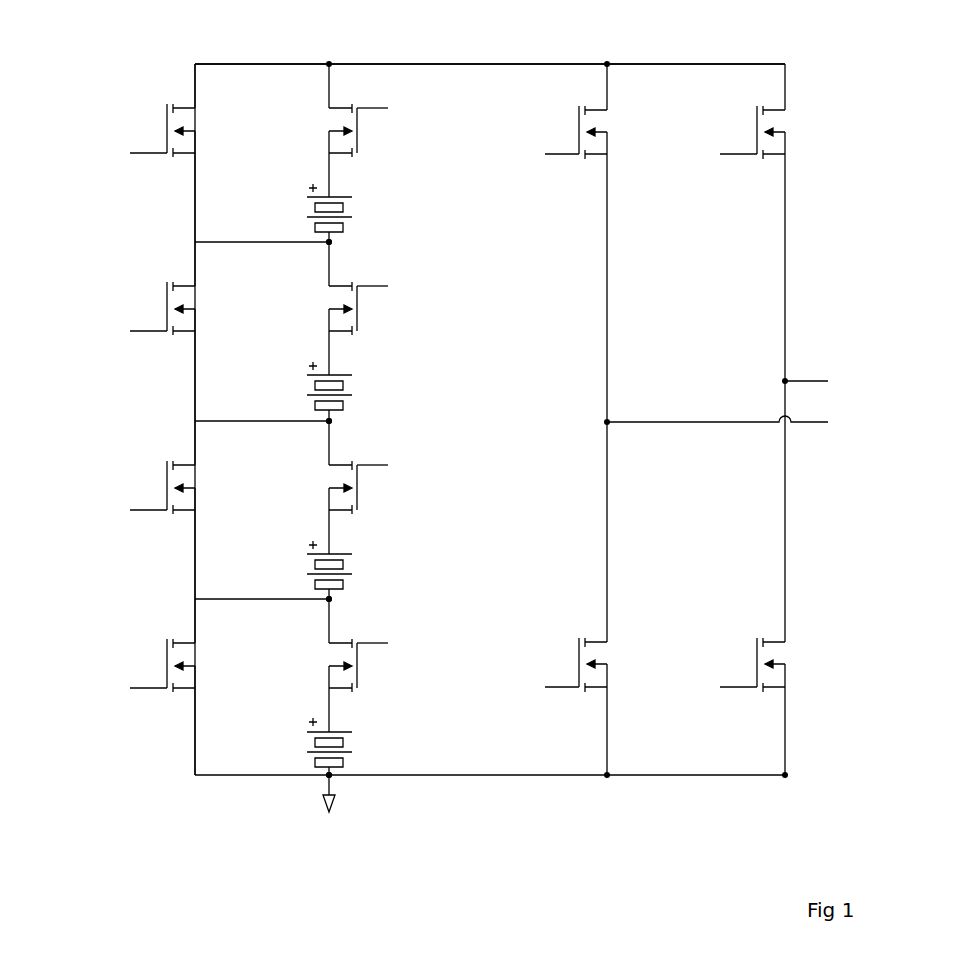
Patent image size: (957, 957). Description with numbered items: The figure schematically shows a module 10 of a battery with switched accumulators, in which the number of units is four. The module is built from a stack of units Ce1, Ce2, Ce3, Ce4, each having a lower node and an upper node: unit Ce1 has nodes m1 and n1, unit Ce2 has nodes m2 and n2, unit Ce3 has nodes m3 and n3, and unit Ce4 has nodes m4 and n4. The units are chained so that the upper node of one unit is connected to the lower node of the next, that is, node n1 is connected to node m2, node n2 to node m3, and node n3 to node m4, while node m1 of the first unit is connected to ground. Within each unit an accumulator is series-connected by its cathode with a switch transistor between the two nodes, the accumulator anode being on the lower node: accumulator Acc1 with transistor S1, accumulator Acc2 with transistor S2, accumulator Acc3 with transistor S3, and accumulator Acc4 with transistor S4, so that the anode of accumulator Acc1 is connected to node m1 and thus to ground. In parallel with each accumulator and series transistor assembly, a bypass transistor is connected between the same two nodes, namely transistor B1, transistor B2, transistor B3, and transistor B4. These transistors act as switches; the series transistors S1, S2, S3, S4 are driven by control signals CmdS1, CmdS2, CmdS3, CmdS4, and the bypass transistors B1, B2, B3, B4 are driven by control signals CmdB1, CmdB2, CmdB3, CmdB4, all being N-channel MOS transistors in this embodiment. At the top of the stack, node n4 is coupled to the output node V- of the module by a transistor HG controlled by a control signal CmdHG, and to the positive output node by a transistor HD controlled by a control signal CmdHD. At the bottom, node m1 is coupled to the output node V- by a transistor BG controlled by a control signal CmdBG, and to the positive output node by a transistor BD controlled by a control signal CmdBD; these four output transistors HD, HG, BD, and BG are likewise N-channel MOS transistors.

The module 10 is at (550, 845).
The output node V− V- is at (732, 422).
The node n4 is at (327, 63).
The node n3 is at (327, 241).
The node n2 is at (327, 420).
The node n1 is at (327, 598).
The node m4 is at (331, 243).
The node m3 is at (331, 422).
The node m2 is at (331, 600).
The node m1 is at (331, 777).
The transistor B4 is at (196, 130).
The transistor B3 is at (197, 308).
The transistor B2 is at (197, 487).
The transistor B1 is at (196, 667).
The transistor S4 is at (325, 130).
The transistor S3 is at (325, 308).
The transistor S2 is at (325, 487).
The transistor S1 is at (326, 665).
The accumulator Acc4 is at (354, 208).
The accumulator Acc3 is at (354, 386).
The accumulator Acc2 is at (354, 565).
The accumulator Acc1 is at (354, 742).
The unit Ce4 is at (158, 217).
The unit Ce3 is at (163, 398).
The unit Ce2 is at (165, 572).
The unit Ce1 is at (168, 733).
The control signal CmdB4 is at (110, 152).
The control signal CmdB3 is at (111, 327).
The control signal CmdB2 is at (111, 506).
The control signal CmdB1 is at (112, 682).
The control signal CmdS4 is at (408, 108).
The control signal CmdS3 is at (408, 286).
The control signal CmdS2 is at (408, 465).
The control signal CmdS1 is at (408, 643).
The transistor HG is at (611, 132).
The transistor HD is at (790, 132).
The transistor BG is at (610, 665).
The transistor BD is at (789, 665).
The control signal CmdHG is at (520, 153).
The control signal CmdHD is at (698, 153).
The control signal CmdBG is at (521, 685).
The control signal CmdBD is at (698, 685).